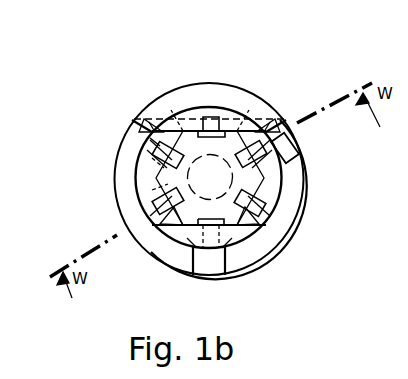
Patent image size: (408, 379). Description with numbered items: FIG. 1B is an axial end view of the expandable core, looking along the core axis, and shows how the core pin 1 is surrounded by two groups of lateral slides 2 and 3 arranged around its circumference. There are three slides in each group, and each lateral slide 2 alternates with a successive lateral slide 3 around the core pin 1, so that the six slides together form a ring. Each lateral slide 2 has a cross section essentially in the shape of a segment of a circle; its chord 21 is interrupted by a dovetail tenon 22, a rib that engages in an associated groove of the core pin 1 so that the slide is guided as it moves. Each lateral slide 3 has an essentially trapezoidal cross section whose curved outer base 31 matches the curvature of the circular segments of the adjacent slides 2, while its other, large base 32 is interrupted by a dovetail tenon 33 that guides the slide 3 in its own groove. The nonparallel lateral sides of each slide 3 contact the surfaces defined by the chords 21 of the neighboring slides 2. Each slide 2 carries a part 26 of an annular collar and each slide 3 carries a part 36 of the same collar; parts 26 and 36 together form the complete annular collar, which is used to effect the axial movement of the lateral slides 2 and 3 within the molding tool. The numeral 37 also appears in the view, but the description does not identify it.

The core pin 1 is at (229, 205).
The lateral slide 2 is at (235, 125).
The lateral slide 3 is at (171, 120).
The chord 21 is at (189, 128).
The dovetail tenon 22 is at (211, 128).
The part of annular collar 26 is at (203, 93).
The outer base 31 is at (150, 142).
The large base 32 is at (154, 160).
The dovetail tenon 33 is at (150, 128).
The part of annular collar 36 is at (291, 138).
The guide surface 37 is at (160, 186).